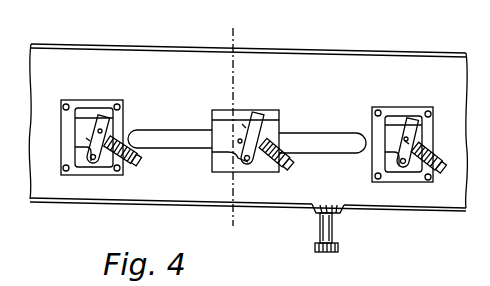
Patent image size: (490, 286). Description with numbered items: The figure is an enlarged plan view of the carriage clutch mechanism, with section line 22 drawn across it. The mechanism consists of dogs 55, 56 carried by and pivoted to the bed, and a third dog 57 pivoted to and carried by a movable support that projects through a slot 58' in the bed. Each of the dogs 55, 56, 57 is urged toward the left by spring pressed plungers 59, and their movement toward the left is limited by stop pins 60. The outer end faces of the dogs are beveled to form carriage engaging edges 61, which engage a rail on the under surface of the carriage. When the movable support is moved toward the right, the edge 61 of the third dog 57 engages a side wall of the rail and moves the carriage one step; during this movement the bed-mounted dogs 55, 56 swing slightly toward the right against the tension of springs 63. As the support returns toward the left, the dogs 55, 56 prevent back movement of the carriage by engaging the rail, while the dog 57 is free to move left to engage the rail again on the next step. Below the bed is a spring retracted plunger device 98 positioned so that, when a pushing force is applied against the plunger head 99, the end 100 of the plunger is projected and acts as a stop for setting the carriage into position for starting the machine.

The section line 22 is at (231, 33).
The dog 55 is at (88, 139).
The dog 56 is at (407, 142).
The third dog 57 is at (244, 127).
The slot 58' is at (247, 141).
The spring pressed plunger 59 is at (418, 172).
The stop pin 60 is at (98, 131).
The carriage engaging edge 61 is at (101, 138).
The spring 63 is at (131, 162).
The spring retracted plunger device 98 is at (333, 235).
The plunger head 99 is at (331, 253).
The end of the plunger 100 is at (328, 207).